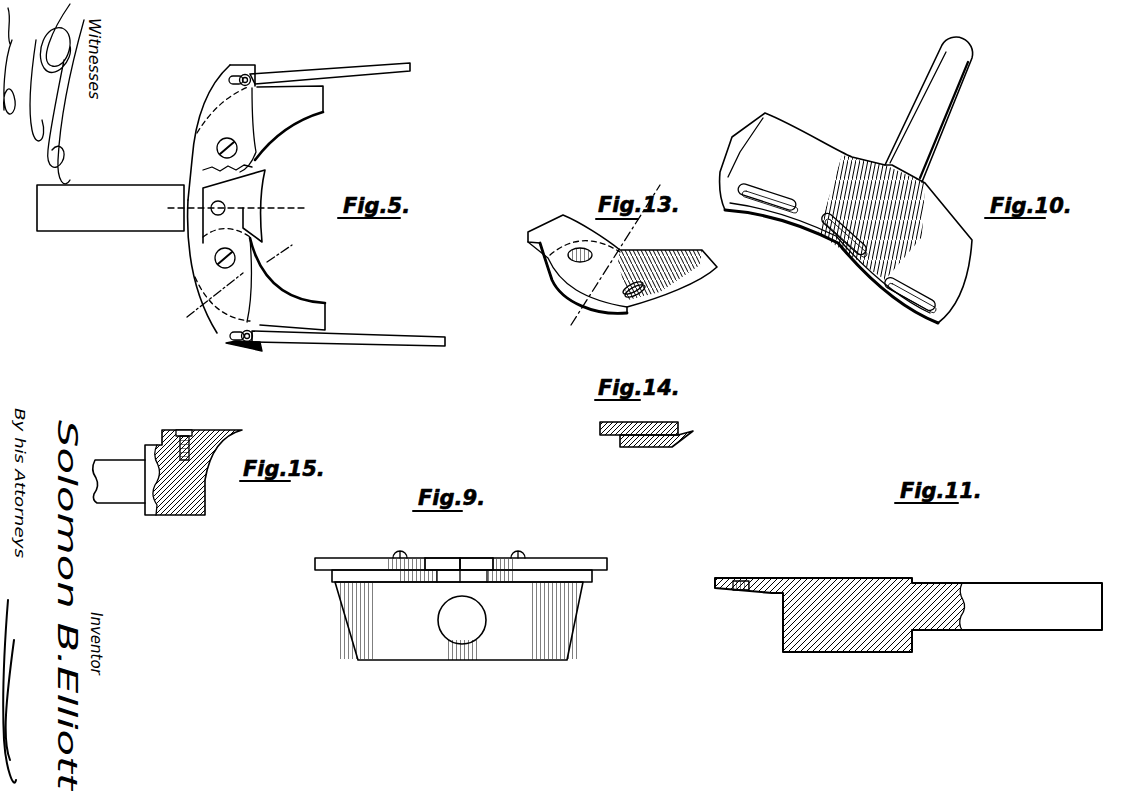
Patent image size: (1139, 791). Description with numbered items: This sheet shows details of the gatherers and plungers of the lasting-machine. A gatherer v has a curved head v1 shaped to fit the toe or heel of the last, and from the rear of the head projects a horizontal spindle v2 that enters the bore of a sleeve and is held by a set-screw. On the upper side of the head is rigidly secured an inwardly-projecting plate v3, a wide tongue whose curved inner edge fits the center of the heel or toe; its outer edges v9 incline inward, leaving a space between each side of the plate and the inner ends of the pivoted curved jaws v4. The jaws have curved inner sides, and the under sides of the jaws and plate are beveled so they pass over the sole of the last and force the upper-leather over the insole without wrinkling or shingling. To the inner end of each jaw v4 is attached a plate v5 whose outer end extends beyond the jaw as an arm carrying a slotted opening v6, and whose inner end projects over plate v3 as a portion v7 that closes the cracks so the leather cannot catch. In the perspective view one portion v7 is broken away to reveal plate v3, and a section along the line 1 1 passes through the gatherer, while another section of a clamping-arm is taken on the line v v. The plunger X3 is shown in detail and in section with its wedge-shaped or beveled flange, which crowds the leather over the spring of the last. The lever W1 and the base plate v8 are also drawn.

In FIG. 5, the section line 1 1 is at (234, 208).
In FIG. 5, the section line v v is at (239, 283).
In FIG. 13, the section line v v is at (630, 233).
In FIG. 9, the section line v v is at (463, 577).
In FIG. 5, the curved head v1 is at (193, 218).
In FIG. 15, the curved head v1 is at (203, 430).
In FIG. 9, the curved head v1 is at (459, 621).
In FIG. 5, the horizontal spindle v2 is at (110, 208).
In FIG. 9, the horizontal spindle v2 is at (462, 628).
In FIG. 5, the inwardly-projecting plate v3 is at (257, 181).
In FIG. 15, the inwardly-projecting plate v3 is at (184, 445).
In FIG. 9, the inwardly-projecting plate v3 is at (492, 558).
In FIG. 5, the pivoted curved jaw v4 is at (278, 133).
In FIG. 13, the pivoted curved jaw v4 is at (566, 226).
In FIG. 14, the pivoted curved jaw v4 is at (650, 449).
In FIG. 9, the pivoted curved jaw v4 is at (383, 558).
In FIG. 5, the plate v5 is at (213, 82).
In FIG. 13, the plate v5 is at (605, 303).
In FIG. 14, the plate v5 is at (621, 423).
In FIG. 9, the plate v5 is at (315, 565).
In FIG. 5, the slotted opening v6 is at (246, 75).
In FIG. 13, the slotted opening v6 is at (653, 300).
In FIG. 5, the projecting portion v7 is at (245, 224).
In FIG. 9, the projecting portion v7 is at (445, 558).
In FIG. 9, the base plate v8 is at (338, 584).
In FIG. 5, the outer edge v9 is at (217, 177).
In FIG. 5, the lever arm W1 is at (364, 68).
In FIG. 10, the plunger X3 is at (846, 180).
In FIG. 11, the plunger X3 is at (908, 603).